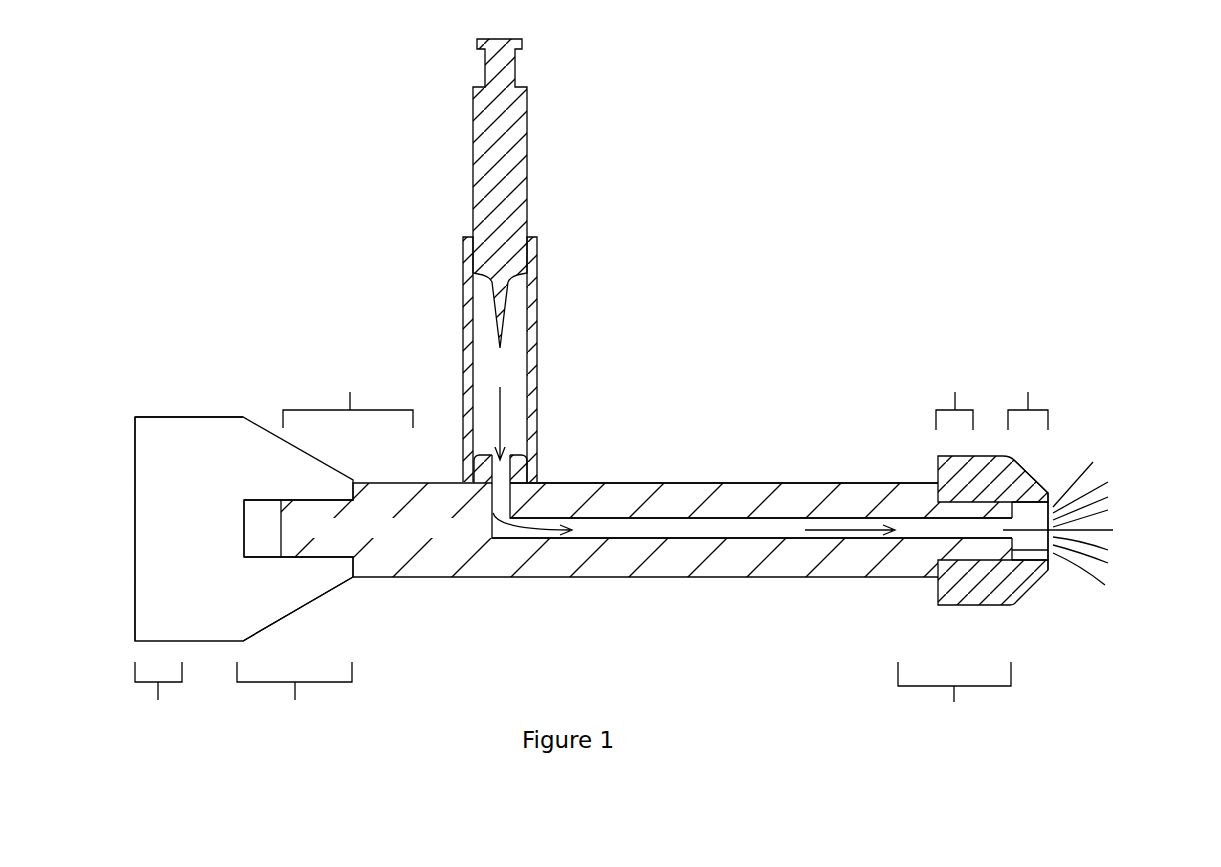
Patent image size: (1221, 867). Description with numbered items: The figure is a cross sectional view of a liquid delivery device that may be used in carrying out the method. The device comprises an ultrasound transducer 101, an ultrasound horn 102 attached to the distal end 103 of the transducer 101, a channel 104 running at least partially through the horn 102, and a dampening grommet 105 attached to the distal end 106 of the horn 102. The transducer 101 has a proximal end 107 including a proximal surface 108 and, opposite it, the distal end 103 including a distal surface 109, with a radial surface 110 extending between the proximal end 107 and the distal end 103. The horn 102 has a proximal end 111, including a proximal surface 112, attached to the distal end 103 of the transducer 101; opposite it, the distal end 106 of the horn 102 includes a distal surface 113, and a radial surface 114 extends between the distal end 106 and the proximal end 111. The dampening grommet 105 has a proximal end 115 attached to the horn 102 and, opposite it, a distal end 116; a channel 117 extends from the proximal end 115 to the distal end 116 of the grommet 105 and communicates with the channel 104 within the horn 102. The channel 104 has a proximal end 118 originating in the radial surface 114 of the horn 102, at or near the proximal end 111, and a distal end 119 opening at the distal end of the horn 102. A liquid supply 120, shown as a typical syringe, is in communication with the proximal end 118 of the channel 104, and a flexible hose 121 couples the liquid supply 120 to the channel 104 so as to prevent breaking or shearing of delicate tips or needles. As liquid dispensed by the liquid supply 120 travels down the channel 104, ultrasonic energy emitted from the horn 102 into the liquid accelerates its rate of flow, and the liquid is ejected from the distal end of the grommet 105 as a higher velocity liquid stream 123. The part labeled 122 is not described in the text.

The ultrasound transducer 101 is at (192, 440).
The ultrasound horn 102 is at (673, 503).
The distal end of transducer 103 is at (294, 697).
The channel 104 is at (912, 530).
The dampening grommet 105 is at (1005, 582).
The distal end of horn 106 is at (954, 697).
The proximal end of transducer 107 is at (158, 697).
The proximal surface of transducer 108 is at (135, 543).
The distal surface of transducer 109 is at (355, 563).
The radial surface of transducer 110 is at (165, 417).
The proximal end of horn 111 is at (348, 396).
The proximal surface of horn 112 is at (281, 527).
The distal surface of horn 113 is at (1080, 547).
The radial surface of horn 114 is at (785, 483).
The proximal end of grommet 115 is at (991, 433).
The distal end of grommet 116 is at (1028, 467).
The grommet channel 117 is at (1028, 515).
The proximal end of channel 118 is at (503, 455).
The distal end of channel 119 is at (1055, 537).
The liquid supply 120 is at (518, 145).
The flexible hose 121 is at (538, 302).
The seat 122 is at (522, 468).
The liquid stream 123 is at (1102, 480).